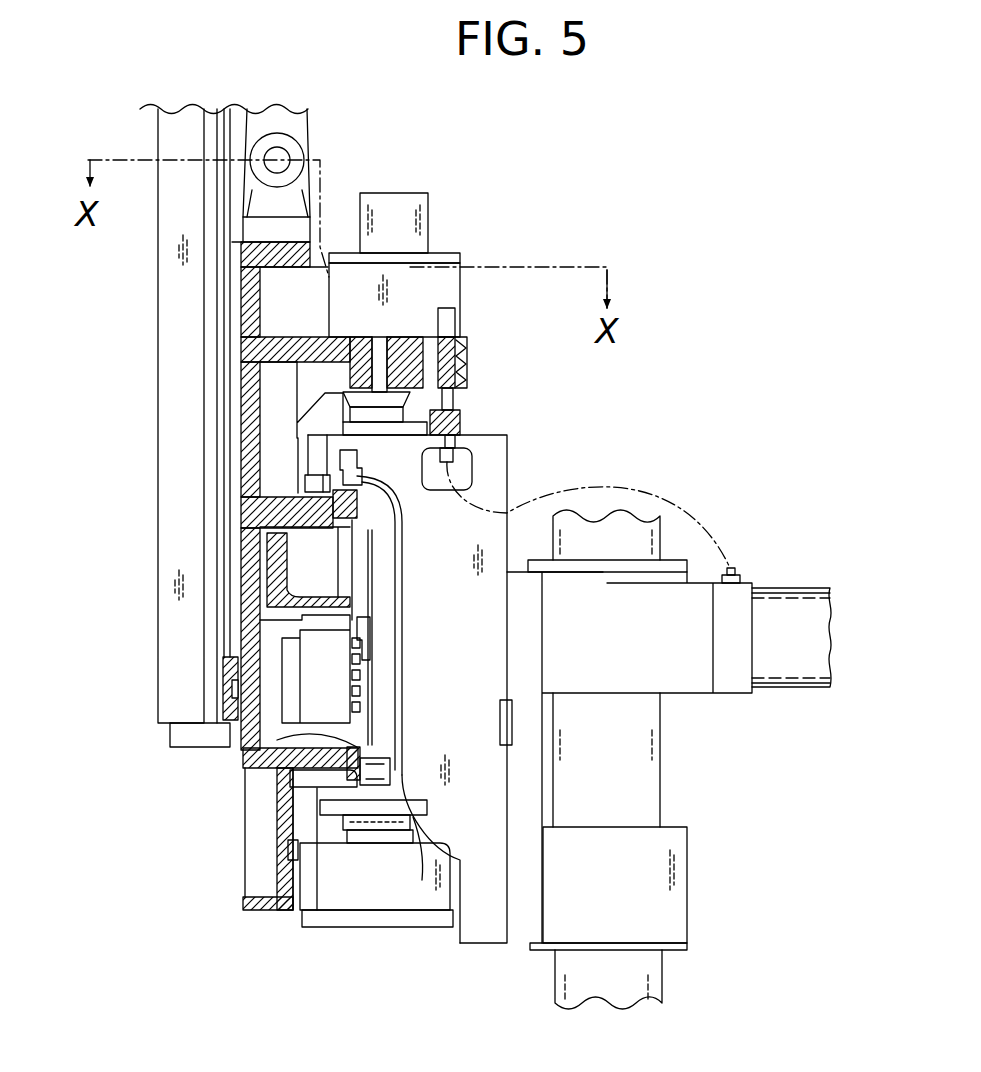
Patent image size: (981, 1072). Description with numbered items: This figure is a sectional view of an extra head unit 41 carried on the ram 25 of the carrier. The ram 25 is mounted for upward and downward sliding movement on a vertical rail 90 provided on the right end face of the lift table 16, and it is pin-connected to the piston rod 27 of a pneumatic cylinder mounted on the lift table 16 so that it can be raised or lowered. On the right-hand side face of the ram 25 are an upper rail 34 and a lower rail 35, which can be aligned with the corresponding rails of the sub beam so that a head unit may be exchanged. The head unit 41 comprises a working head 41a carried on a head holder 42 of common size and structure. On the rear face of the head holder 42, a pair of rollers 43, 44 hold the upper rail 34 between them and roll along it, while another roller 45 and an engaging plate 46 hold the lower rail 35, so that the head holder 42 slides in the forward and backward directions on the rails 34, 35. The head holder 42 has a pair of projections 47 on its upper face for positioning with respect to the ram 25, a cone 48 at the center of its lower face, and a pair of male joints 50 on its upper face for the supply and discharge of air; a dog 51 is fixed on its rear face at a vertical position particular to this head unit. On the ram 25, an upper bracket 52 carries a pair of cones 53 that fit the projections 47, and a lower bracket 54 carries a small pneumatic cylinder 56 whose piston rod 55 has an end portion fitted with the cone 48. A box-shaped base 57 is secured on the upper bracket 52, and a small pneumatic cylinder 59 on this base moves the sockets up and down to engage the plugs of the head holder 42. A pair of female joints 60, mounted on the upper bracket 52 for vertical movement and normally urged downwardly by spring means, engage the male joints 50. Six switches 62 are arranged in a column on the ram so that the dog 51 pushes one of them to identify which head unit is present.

The lift table 16 is at (172, 432).
The ram 25 is at (158, 550).
The piston rod 27 is at (290, 108).
The upper rail 34 is at (450, 490).
The lower rail 35 is at (247, 763).
The head unit 41 is at (511, 462).
The working head 41a is at (695, 675).
The head holder 42 is at (475, 763).
The roller 43 is at (330, 490).
The roller 44 is at (343, 473).
The roller 45 is at (455, 825).
The engaging plate 46 is at (310, 790).
The projection 47 is at (463, 417).
The cone 48 is at (425, 837).
The male joint 50 is at (467, 405).
The dog 51 is at (260, 617).
The upper bracket 52 is at (420, 343).
The cone 53 is at (350, 372).
The lower bracket 54 is at (363, 837).
The piston rod 55 is at (305, 928).
The small pneumatic cylinder 56 is at (378, 897).
The box-shaped base 57 is at (412, 287).
The small pneumatic cylinder 59 is at (390, 208).
The female joint 60 is at (463, 340).
The switch 62 is at (362, 690).
The vertical rail 90 is at (223, 265).